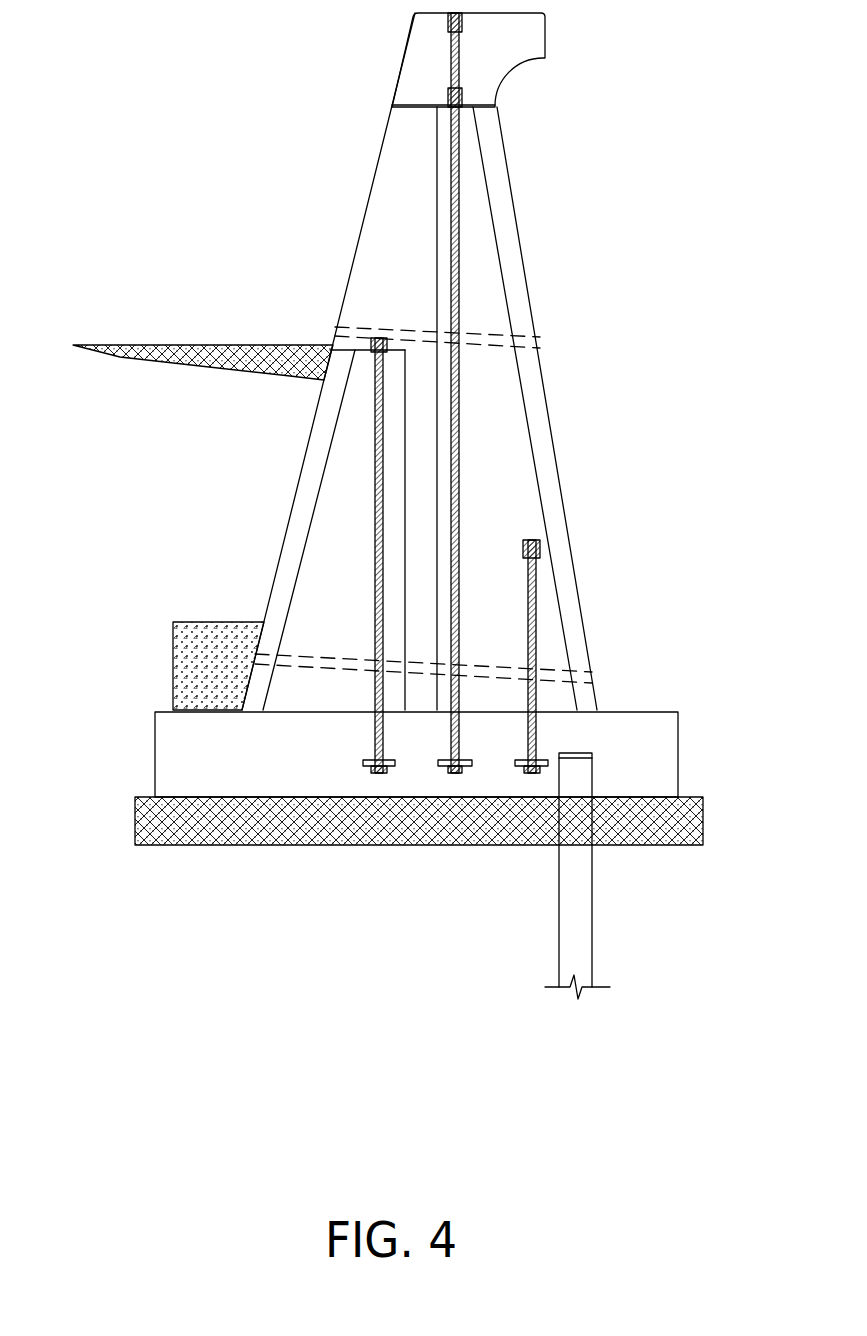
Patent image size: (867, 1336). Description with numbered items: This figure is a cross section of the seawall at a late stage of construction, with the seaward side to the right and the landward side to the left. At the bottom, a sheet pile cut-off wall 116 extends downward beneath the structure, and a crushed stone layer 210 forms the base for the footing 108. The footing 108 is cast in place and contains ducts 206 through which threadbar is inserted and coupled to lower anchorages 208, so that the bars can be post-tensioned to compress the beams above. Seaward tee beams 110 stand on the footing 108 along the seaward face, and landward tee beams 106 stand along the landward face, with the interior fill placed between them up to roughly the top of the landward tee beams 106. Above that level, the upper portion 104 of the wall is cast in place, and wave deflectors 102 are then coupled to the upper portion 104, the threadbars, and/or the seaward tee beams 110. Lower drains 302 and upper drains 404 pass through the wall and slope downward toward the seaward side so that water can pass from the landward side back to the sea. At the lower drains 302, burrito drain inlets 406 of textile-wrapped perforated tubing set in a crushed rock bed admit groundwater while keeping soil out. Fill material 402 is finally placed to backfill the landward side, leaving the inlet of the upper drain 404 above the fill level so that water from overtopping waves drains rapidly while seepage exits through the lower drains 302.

The wave deflector 102 is at (410, 70).
The cast-in-place upper portion 104 is at (370, 228).
The landward tee beam 106 is at (297, 510).
The footing 108 is at (165, 740).
The seaward tee beam 110 is at (517, 323).
The sheet pile cut-off wall 116 is at (570, 940).
The duct 206 is at (375, 727).
The lower anchorage 208 is at (365, 763).
The crushed stone layer 210 is at (138, 835).
The drain 302 is at (265, 655).
The fill material 402 is at (150, 347).
The upper drain 404 is at (335, 328).
The burrito drain inlet 406 is at (180, 622).